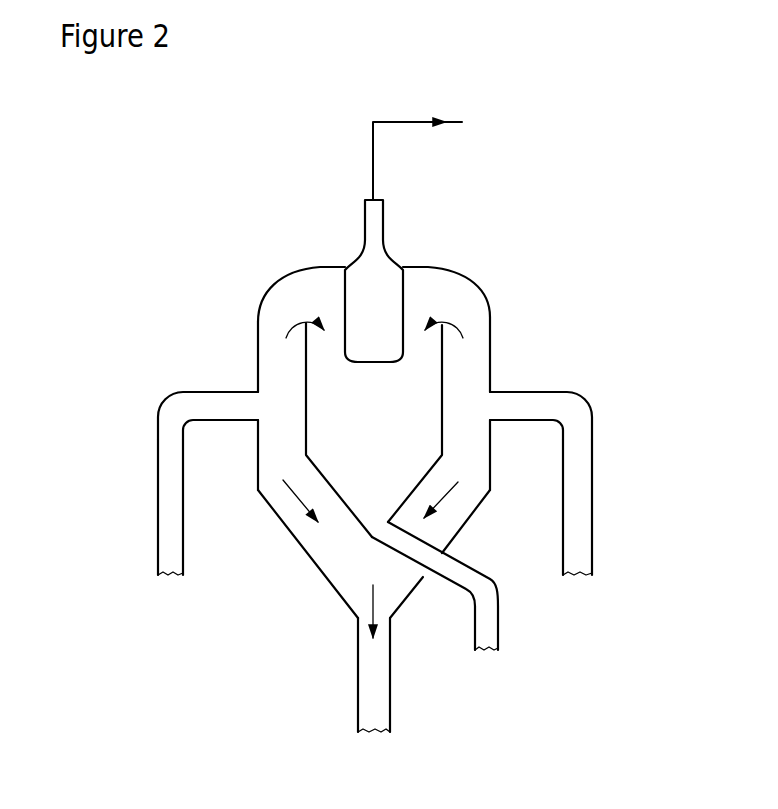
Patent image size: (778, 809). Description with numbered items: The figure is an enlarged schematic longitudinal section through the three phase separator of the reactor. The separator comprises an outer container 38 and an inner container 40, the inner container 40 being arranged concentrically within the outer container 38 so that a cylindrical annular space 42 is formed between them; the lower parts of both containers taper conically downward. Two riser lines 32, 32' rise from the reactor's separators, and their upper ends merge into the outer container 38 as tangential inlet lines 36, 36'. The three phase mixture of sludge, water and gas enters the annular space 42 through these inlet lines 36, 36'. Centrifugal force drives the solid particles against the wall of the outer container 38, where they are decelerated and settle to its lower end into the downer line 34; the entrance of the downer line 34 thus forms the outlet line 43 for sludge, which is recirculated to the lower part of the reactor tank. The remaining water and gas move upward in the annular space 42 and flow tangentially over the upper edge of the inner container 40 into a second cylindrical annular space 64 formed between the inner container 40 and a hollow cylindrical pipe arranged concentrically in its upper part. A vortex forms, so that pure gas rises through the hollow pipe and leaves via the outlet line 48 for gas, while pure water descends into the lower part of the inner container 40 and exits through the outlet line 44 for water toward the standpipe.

The riser line 32 is at (135, 507).
The riser line 32' is at (602, 507).
The downer line 34 is at (382, 712).
The inlet line 36 is at (208, 392).
The inlet line 36' is at (554, 399).
The outer container 38 is at (477, 284).
The inner container 40 is at (443, 373).
The cylindrical annular space 42 is at (270, 458).
The outlet line for sludge 43 is at (360, 625).
The outlet line for water 44 is at (373, 221).
The outlet line for gas 48 is at (452, 120).
The cylindrical annular space 64 is at (332, 345).